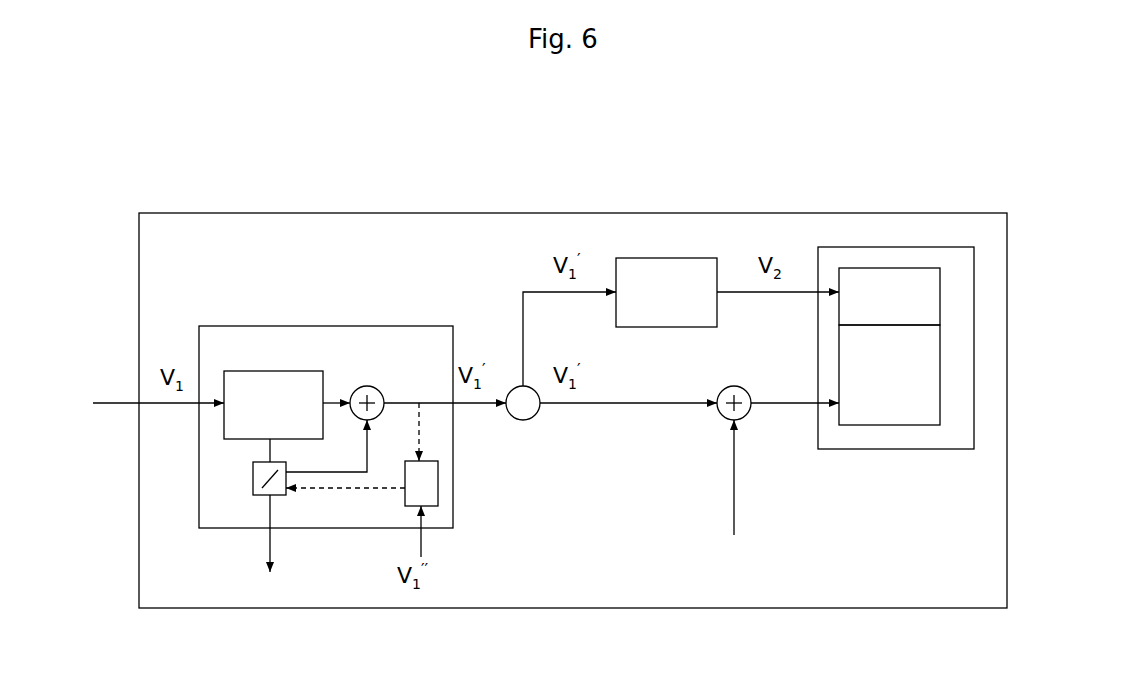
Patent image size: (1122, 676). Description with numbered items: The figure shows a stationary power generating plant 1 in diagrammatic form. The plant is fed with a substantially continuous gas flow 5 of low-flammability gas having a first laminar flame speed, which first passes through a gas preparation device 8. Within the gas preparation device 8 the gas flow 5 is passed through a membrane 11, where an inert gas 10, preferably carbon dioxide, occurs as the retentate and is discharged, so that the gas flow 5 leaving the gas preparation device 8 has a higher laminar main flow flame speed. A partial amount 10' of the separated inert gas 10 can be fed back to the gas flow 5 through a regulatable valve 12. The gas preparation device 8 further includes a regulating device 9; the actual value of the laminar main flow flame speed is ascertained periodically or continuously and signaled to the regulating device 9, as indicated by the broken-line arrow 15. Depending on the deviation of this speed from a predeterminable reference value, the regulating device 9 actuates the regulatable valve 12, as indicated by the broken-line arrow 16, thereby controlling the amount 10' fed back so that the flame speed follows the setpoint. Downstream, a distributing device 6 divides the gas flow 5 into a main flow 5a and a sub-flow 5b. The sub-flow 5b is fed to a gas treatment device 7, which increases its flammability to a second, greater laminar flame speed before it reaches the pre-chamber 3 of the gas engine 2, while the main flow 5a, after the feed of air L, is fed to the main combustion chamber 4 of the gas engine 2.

The stationary power generating plant 1 is at (883, 212).
The gas engine 2 is at (975, 287).
The pre-chamber 3 is at (889, 296).
The main combustion chamber 4 is at (889, 375).
The gas flow 5 is at (115, 403).
The main flow 5a is at (648, 403).
The sub-flow 5b is at (519, 323).
The distributing device 6 is at (523, 405).
The gas treatment device 7 is at (666, 292).
The gas preparation device 8 is at (310, 326).
The regulating device 9 is at (421, 483).
The inert gas 10 is at (203, 553).
The partial amount of inert gas 10' is at (314, 544).
The membrane 11 is at (273, 405).
The regulatable valve 12 is at (253, 473).
The broken-line arrow 15 is at (422, 422).
The broken-line arrow 16 is at (329, 488).
The air L is at (738, 518).